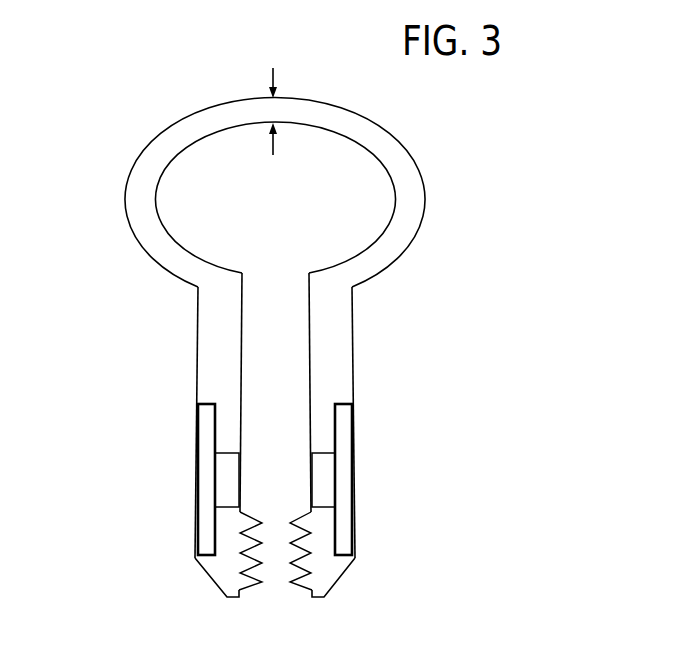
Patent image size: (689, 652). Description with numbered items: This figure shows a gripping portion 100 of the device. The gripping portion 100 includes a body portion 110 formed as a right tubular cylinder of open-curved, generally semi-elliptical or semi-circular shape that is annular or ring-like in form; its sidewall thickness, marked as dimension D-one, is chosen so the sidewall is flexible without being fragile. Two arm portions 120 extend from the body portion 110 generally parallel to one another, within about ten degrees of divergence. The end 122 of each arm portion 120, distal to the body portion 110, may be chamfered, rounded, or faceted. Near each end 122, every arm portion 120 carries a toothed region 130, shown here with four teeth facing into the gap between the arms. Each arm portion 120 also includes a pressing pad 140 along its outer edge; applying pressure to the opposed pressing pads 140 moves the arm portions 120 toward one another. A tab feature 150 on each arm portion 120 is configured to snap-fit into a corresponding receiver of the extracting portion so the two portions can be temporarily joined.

The gripping portion 100 is at (114, 101).
The body portion 110 is at (138, 193).
The arm portion 120 is at (215, 338).
The end 122 is at (202, 573).
The toothed region 130 is at (302, 580).
The pressing pad 140 is at (205, 424).
The tab feature 150 is at (222, 479).